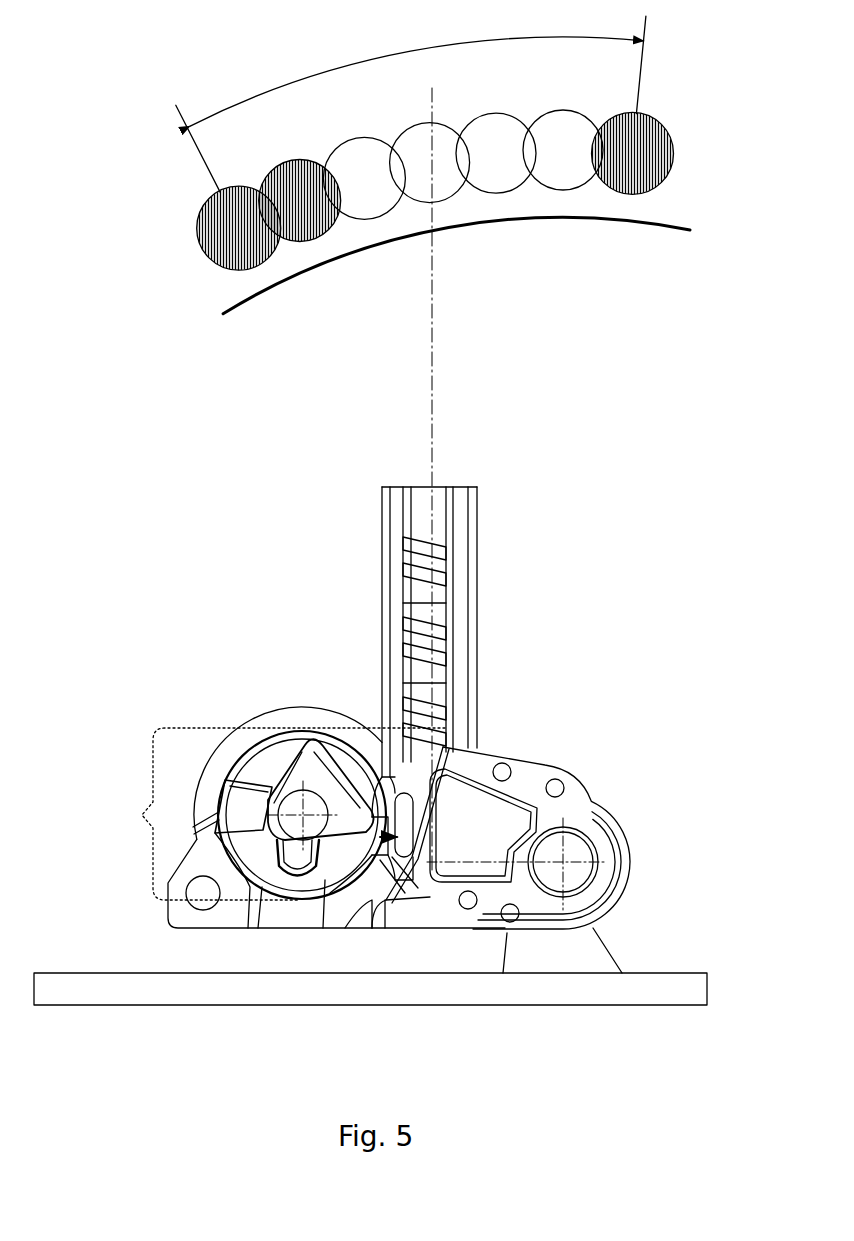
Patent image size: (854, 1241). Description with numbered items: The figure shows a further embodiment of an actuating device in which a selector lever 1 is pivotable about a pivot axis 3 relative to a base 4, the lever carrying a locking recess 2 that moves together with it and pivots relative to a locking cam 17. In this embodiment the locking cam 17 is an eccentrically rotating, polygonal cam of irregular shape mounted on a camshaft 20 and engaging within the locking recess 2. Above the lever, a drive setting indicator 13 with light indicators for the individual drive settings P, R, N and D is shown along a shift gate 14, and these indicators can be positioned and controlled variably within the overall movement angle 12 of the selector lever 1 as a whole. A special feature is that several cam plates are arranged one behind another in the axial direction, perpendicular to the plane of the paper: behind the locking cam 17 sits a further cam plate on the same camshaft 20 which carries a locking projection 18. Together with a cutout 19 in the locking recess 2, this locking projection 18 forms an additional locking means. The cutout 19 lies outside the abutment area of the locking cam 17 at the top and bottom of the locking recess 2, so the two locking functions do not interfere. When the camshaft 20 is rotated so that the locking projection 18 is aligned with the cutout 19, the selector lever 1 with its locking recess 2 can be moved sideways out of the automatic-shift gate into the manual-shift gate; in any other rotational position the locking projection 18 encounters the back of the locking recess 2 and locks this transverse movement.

The selector lever 1 is at (353, 578).
The locking recess 2 is at (308, 817).
The pivot axis 3 is at (563, 862).
The base 4 is at (638, 987).
The overall movement angle 12 is at (411, 104).
The drive setting indicator 13 is at (160, 262).
The shift gate 14 is at (597, 218).
The locking cam 17 is at (300, 767).
The locking projection 18 is at (238, 805).
The cutout 19 is at (335, 880).
The camshaft 20 is at (312, 807).